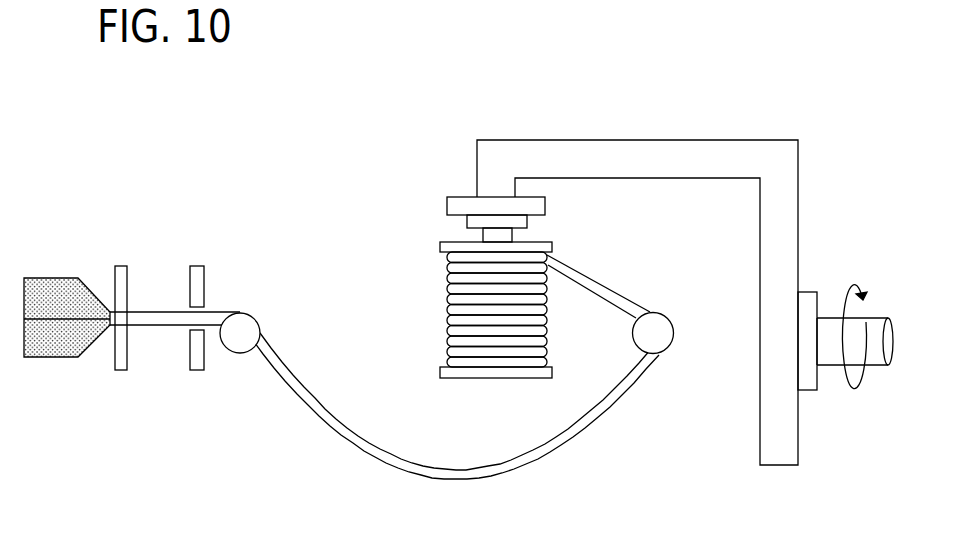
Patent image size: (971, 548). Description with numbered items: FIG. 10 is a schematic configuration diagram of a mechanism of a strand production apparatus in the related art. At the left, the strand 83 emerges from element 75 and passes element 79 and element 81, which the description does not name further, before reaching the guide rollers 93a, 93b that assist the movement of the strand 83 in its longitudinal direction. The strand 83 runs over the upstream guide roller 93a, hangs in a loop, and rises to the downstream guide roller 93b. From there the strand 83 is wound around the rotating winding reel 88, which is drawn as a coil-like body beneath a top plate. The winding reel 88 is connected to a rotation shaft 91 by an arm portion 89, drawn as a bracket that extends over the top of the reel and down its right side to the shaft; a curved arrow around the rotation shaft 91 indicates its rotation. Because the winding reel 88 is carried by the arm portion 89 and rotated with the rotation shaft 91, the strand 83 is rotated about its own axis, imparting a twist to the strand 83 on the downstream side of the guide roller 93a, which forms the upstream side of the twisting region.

The nozzle 75 is at (53, 278).
The first guide member 79 is at (120, 267).
The second guide member 81 is at (197, 267).
The strand 83 is at (288, 367).
The winding reel 88 is at (452, 242).
The arm portion 89 is at (658, 152).
The rotation shaft 91 is at (835, 317).
The guide roller 93a is at (238, 341).
The guide roller 93b is at (658, 325).